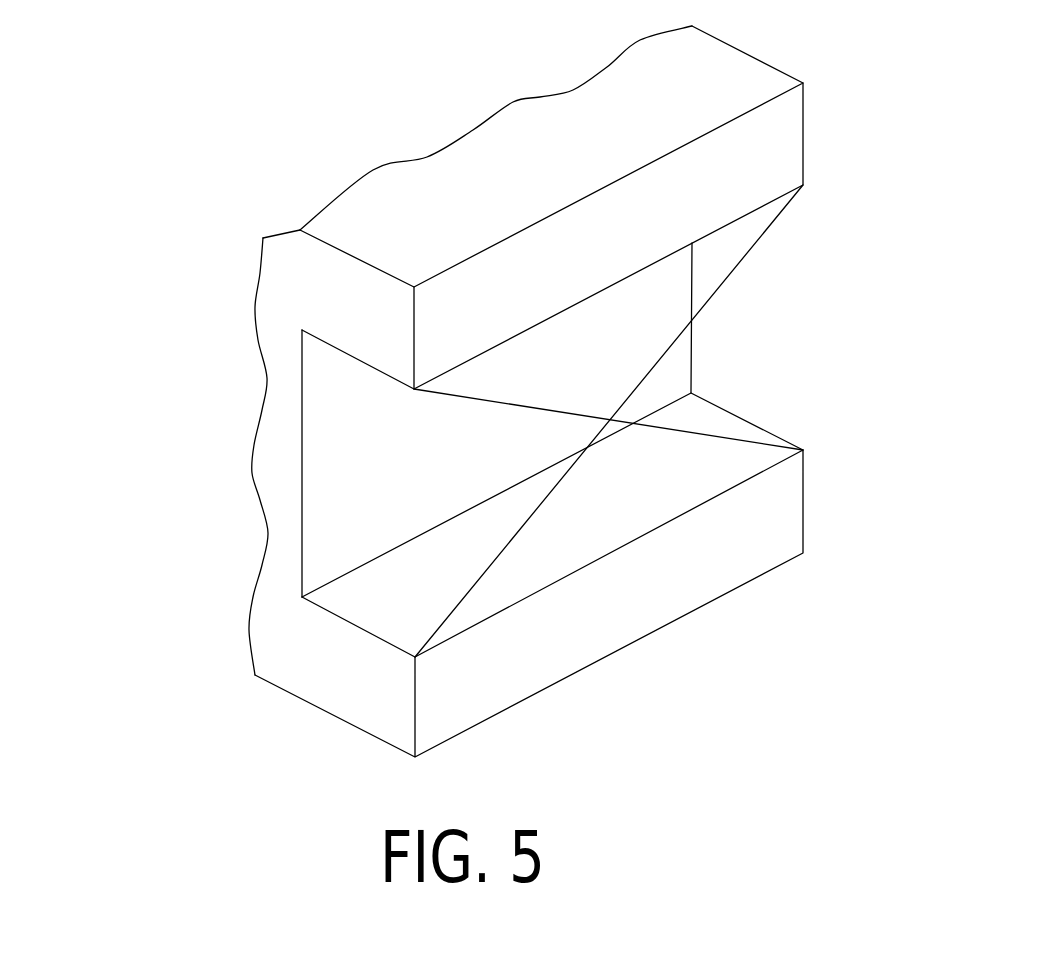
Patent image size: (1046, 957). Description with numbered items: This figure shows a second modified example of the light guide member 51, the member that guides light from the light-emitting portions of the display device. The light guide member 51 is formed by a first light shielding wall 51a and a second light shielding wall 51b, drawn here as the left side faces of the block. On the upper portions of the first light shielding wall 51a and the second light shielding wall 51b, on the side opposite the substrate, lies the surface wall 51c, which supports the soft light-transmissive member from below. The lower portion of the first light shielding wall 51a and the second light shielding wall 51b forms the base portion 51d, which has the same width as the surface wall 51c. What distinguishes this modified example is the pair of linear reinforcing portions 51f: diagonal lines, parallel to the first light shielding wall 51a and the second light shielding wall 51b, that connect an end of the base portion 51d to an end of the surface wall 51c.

The light guide member 51 is at (230, 237).
The first light shielding wall 51a is at (230, 456).
The second light shielding wall 51b is at (268, 468).
The surface wall 51c is at (375, 198).
The base portion 51d is at (320, 683).
The linear reinforcing portion 51f is at (760, 235).